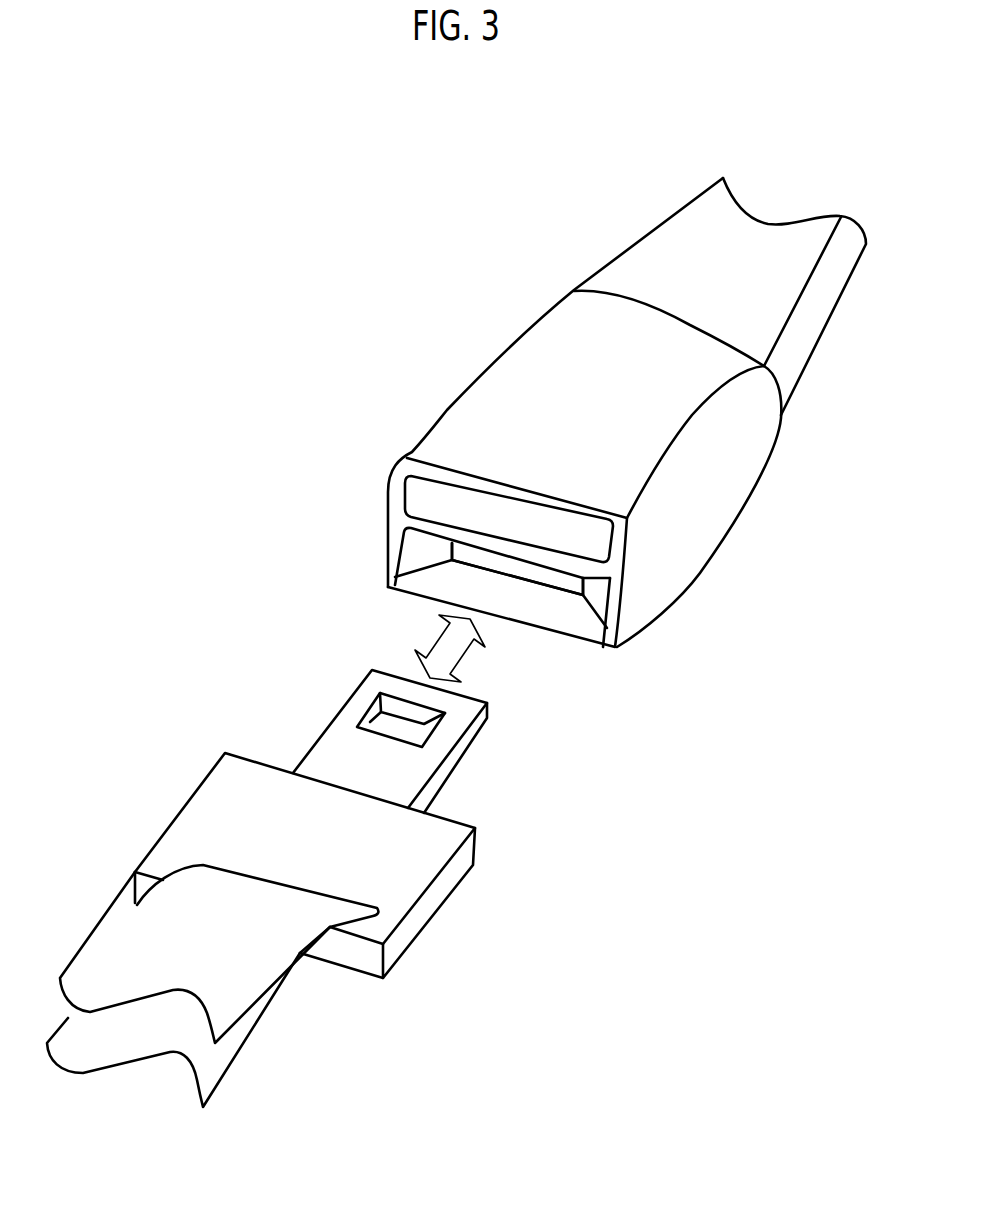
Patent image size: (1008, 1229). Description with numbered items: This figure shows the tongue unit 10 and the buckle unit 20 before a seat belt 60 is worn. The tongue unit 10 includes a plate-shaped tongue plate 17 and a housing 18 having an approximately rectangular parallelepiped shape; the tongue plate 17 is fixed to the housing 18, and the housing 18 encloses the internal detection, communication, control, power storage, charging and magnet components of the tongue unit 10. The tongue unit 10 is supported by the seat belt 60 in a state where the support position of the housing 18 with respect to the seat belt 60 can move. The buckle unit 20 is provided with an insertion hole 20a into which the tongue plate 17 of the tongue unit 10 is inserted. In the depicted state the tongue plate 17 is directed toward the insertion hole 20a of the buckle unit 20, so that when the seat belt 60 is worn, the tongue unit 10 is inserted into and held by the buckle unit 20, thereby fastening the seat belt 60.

The tongue unit 10 is at (632, 723).
The tongue plate 17 is at (457, 722).
The housing 18 is at (450, 832).
The buckle unit 20 is at (510, 377).
The insertion hole 20a is at (452, 545).
The seat belt 60 is at (115, 948).